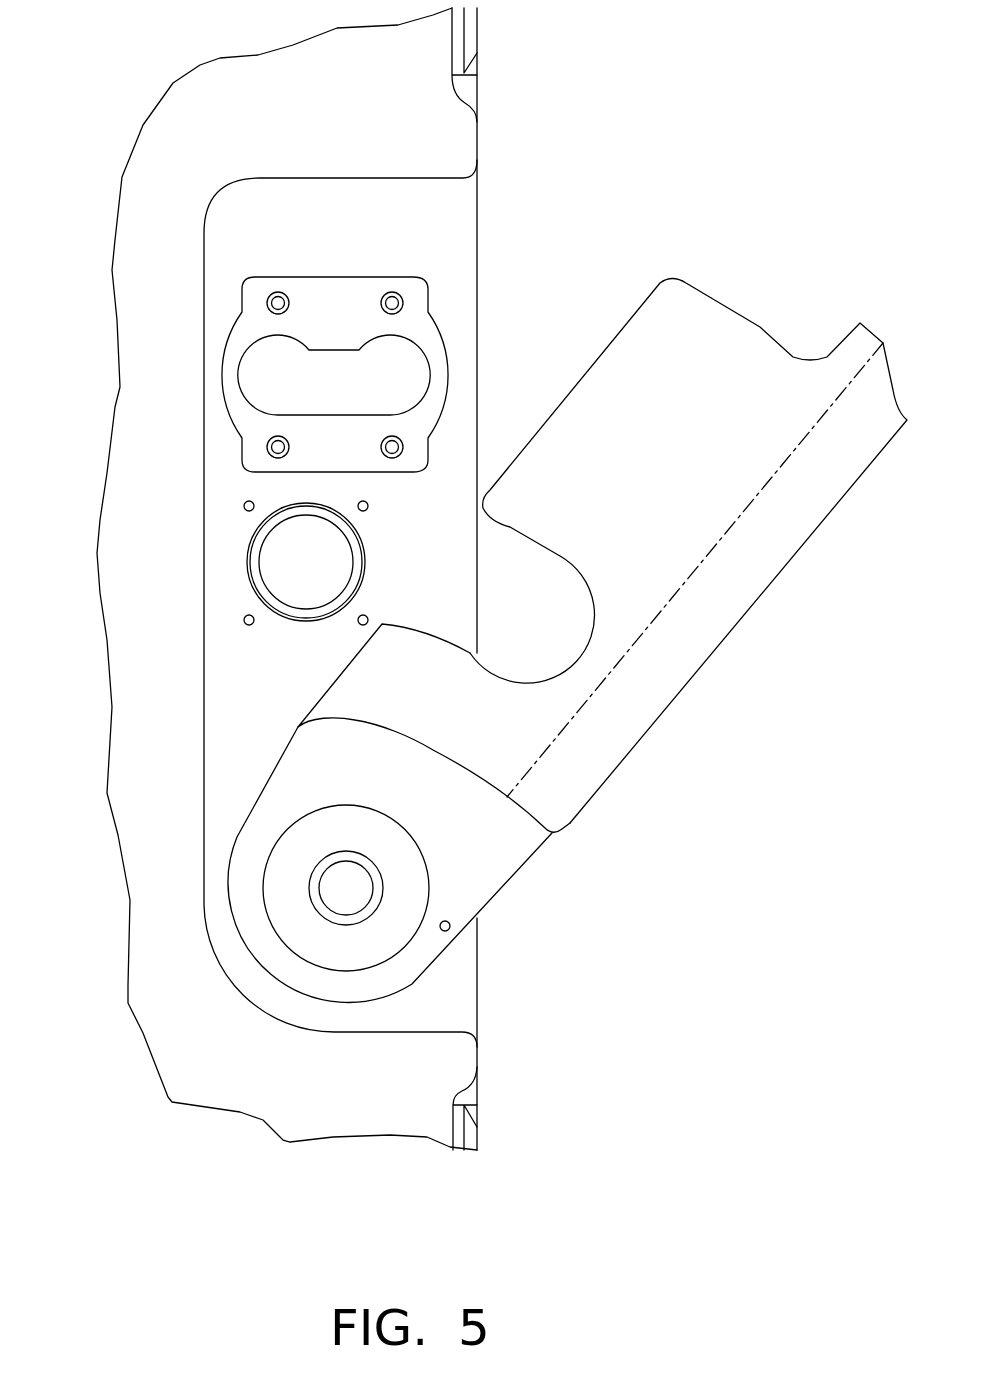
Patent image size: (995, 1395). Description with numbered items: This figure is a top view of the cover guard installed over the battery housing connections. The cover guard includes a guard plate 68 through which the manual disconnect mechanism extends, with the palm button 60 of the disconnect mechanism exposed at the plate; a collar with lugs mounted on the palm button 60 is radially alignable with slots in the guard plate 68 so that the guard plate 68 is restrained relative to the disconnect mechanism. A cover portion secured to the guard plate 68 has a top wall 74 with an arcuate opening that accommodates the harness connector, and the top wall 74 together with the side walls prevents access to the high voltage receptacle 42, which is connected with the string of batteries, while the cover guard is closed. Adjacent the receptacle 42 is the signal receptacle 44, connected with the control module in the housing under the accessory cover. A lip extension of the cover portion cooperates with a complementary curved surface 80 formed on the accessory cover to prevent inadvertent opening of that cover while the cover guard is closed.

The curved surface 80 is at (432, 179).
The high voltage receptacle 42 is at (440, 358).
The signal receptacle 44 is at (277, 562).
The top wall 74 is at (710, 638).
The guard plate 68 is at (492, 873).
The palm button 60 is at (333, 960).